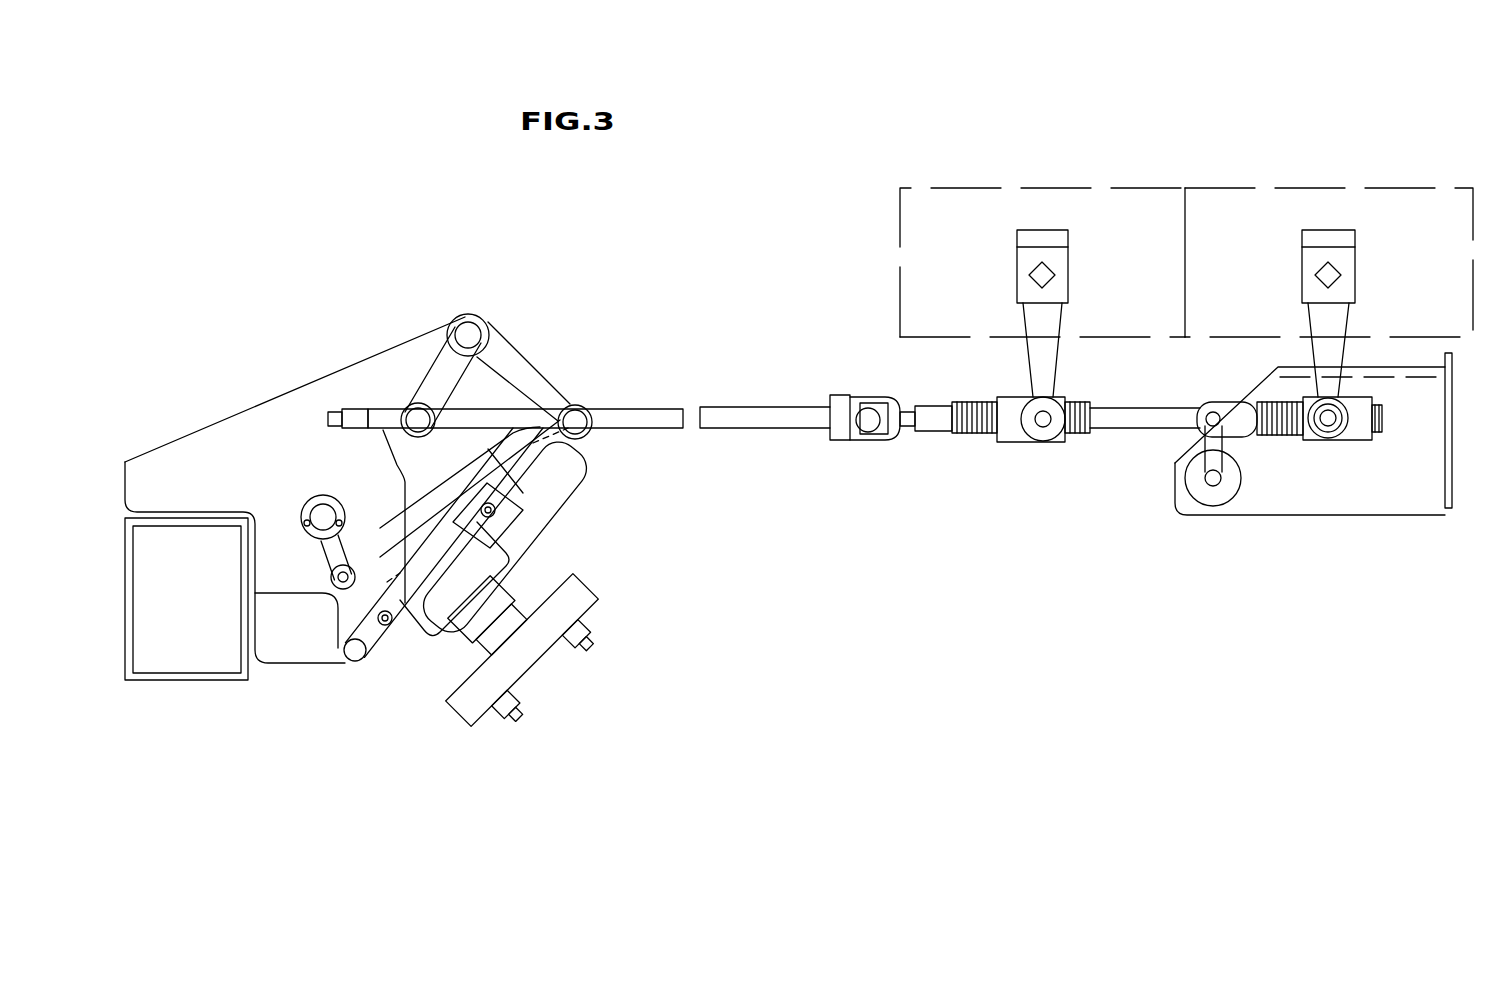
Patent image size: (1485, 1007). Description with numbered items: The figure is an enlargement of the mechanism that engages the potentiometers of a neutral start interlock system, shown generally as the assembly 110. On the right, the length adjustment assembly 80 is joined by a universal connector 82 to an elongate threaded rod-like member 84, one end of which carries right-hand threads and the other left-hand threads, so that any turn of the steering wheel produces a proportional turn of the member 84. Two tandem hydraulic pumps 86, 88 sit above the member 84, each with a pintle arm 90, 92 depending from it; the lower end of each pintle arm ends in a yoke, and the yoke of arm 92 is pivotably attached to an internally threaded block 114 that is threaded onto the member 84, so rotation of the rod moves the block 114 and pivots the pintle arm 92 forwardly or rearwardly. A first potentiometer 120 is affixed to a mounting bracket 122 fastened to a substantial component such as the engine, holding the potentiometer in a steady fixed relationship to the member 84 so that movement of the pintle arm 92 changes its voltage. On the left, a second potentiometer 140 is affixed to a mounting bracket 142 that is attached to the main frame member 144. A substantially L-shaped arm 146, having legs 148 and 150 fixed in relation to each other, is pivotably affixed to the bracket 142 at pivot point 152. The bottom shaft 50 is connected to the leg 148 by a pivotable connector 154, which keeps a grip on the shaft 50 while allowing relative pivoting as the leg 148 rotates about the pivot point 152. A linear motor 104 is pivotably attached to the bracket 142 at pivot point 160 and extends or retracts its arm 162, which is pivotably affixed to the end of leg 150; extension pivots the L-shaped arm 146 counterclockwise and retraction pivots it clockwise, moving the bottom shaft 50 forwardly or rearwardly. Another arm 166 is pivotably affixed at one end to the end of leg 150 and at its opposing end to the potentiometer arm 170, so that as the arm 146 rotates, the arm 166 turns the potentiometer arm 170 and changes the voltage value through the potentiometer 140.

The bottom shaft 50 is at (641, 430).
The length adjustment assembly 80 is at (727, 430).
The universal connector 82 is at (880, 442).
The elongate threaded rod-like member 84 is at (1078, 434).
The tandem hydraulic pump 86 is at (955, 188).
The tandem hydraulic pump 88 is at (1248, 188).
The pintle arm 90 is at (1055, 330).
The pintle arm 92 is at (1337, 320).
The linear motor 104 is at (577, 600).
The drive assembly 110 is at (428, 255).
The internally threaded block 114 is at (1358, 432).
The first potentiometer 120 is at (1212, 500).
The mounting bracket 122 is at (1297, 507).
The second potentiometer 140 is at (340, 497).
The mounting bracket 142 is at (188, 452).
The main frame member 144 is at (213, 672).
The L-shaped arm 146 is at (510, 302).
The leg 148 is at (440, 360).
The leg 150 is at (528, 380).
The pivot point 152 is at (466, 325).
The pivotable connector 154 is at (413, 406).
The pivot point 160 is at (354, 652).
The arm 162 is at (532, 464).
The arm 166 is at (524, 495).
The potentiometer arm 170 is at (327, 557).